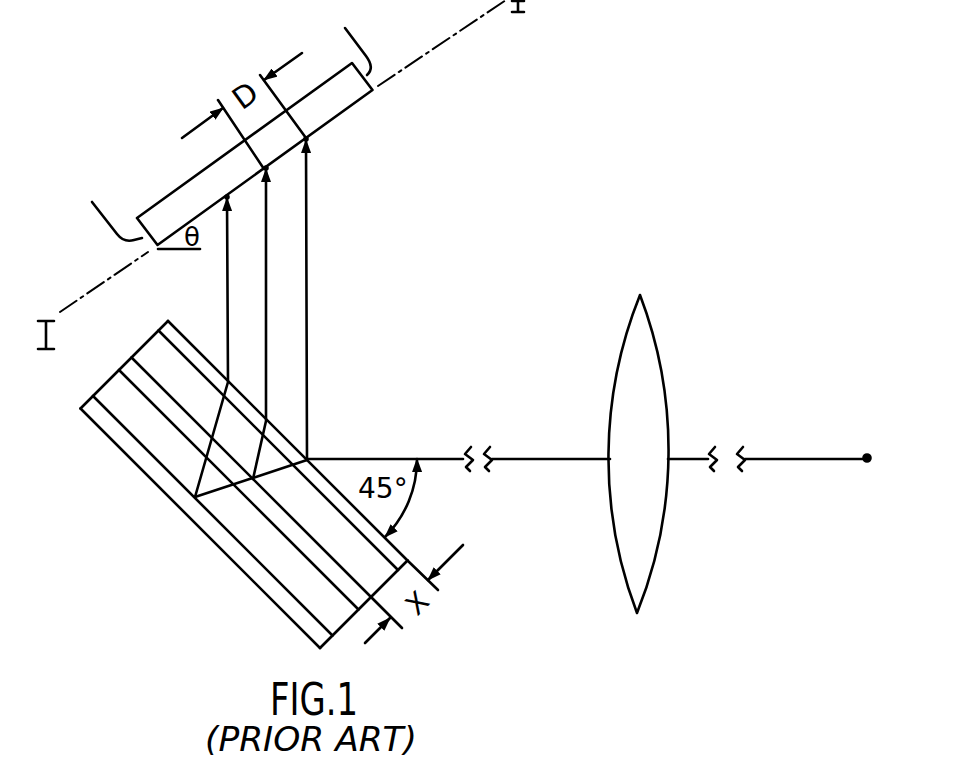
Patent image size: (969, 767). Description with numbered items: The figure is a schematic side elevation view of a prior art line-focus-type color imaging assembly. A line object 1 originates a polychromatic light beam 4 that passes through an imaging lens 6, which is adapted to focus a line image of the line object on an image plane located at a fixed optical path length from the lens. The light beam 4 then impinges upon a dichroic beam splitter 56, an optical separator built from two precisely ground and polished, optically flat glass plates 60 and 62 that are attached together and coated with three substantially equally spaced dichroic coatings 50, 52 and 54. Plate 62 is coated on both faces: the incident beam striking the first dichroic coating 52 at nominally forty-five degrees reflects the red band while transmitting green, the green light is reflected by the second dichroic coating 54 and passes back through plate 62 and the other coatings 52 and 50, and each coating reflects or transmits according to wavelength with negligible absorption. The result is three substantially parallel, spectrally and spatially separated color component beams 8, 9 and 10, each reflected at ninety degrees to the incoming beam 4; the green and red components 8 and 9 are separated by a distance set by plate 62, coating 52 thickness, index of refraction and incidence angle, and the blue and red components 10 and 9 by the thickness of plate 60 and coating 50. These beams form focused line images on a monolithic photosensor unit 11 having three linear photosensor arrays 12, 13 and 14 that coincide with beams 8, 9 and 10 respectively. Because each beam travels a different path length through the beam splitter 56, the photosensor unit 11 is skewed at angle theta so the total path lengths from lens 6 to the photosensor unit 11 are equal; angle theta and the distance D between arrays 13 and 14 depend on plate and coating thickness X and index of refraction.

The line object 1 is at (867, 462).
The polychromatic light beam 4 is at (375, 459).
The imaging lens 6 is at (660, 352).
The color component beam 8 is at (230, 337).
The color component beam 9 is at (276, 348).
The color component beam 10 is at (309, 336).
The monolithic photosensor unit 11 is at (347, 109).
The linear photosensor array 12 is at (230, 197).
The linear photosensor array 13 is at (270, 170).
The linear photosensor array 14 is at (313, 137).
The dichroic coating 50 is at (170, 331).
The first dichroic coating 52 is at (153, 396).
The second dichroic coating 54 is at (97, 424).
The dichroic beam splitter 56 is at (224, 472).
The glass plate 60 is at (149, 348).
The glass plate 62 is at (107, 395).